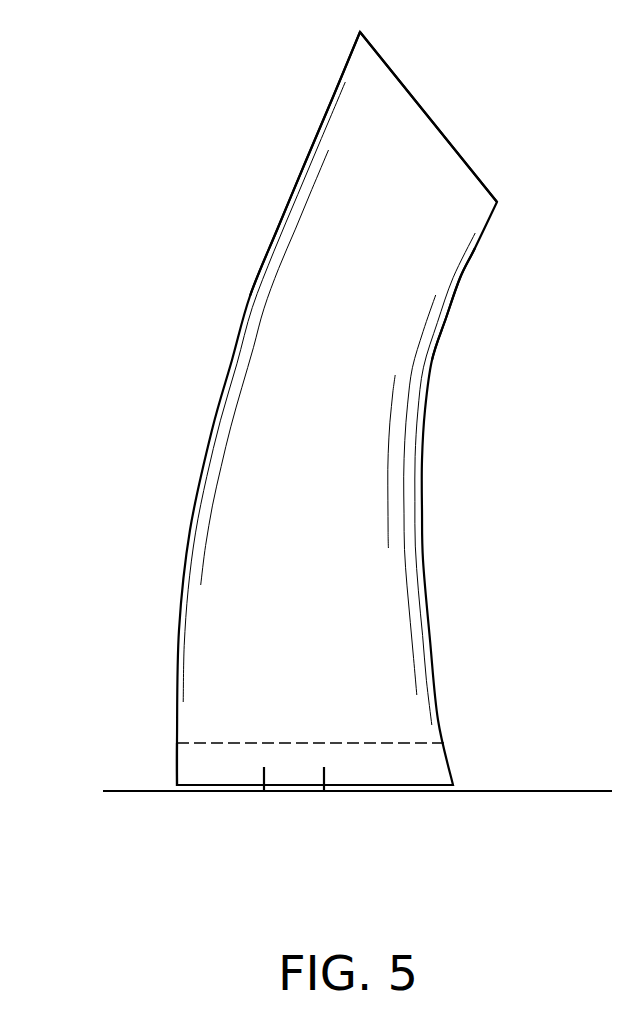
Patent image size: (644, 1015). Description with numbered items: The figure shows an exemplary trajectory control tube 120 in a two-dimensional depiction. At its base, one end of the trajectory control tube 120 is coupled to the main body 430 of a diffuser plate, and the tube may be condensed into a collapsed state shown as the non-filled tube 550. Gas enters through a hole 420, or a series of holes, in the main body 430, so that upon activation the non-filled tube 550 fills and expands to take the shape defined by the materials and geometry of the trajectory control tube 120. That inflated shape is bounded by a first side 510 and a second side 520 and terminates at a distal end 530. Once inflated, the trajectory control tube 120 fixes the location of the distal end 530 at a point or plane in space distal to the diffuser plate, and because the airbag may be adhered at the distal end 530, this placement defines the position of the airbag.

The trajectory control tube 120 is at (320, 470).
The first side 510 is at (248, 300).
The second side 520 is at (460, 278).
The distal end 530 is at (448, 138).
The non-filled tube 550 is at (177, 767).
The hole 420 is at (292, 791).
The main body 430 is at (525, 791).